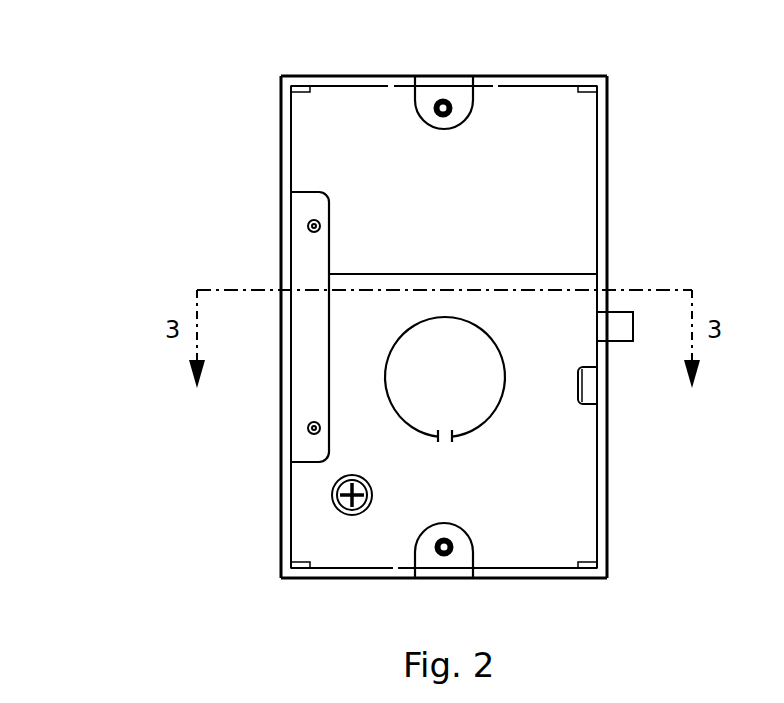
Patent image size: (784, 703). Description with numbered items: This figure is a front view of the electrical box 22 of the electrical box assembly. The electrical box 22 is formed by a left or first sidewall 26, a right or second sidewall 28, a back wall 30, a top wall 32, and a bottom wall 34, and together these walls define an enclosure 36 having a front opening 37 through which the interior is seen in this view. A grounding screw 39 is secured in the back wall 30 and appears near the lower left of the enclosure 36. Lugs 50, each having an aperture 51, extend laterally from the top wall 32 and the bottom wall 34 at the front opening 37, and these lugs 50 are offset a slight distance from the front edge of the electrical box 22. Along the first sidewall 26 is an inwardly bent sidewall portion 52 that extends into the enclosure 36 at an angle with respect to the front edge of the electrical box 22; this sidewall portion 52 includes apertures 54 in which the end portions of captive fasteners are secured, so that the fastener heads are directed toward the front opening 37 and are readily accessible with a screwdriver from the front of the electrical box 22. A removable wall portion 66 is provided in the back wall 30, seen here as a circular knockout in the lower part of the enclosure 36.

The electrical box 22 is at (128, 160).
The first sidewall 26 is at (289, 147).
The second sidewall 28 is at (600, 128).
The back wall 30 is at (551, 402).
The top wall 32 is at (508, 78).
The bottom wall 34 is at (545, 574).
The enclosure 36 is at (546, 202).
The front opening 37 is at (565, 468).
The grounding screw 39 is at (333, 500).
The lugs 50 is at (463, 120).
The apertures 51 is at (440, 110).
The inwardly bent sidewall portion 52 is at (322, 342).
The apertures 54 is at (320, 226).
The removable wall portions 66 is at (458, 389).